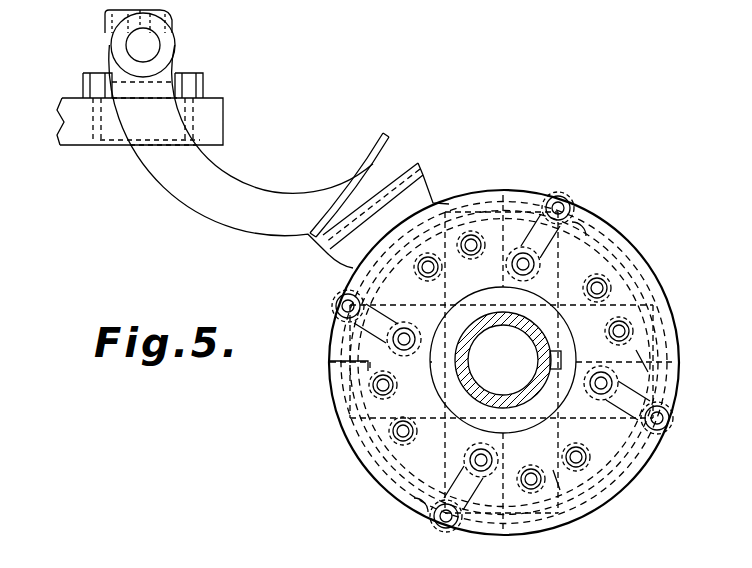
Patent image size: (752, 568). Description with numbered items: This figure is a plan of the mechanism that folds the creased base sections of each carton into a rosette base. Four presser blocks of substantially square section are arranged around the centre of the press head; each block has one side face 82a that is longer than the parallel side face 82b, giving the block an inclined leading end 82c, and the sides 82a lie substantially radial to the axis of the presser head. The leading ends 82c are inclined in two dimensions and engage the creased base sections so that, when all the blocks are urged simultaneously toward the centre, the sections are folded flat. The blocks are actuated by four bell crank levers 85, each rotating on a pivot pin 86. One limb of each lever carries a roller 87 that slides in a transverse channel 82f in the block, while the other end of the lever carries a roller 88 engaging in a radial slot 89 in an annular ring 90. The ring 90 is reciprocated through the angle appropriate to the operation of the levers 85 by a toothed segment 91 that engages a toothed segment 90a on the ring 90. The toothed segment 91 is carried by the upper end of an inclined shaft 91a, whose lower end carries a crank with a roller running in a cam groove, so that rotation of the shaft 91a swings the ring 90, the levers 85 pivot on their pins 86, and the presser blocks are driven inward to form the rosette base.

The side face 82a is at (503, 222).
The side face 82b is at (563, 473).
The inclined leading end 82c is at (522, 328).
The transverse channel 82f is at (636, 350).
The bell crank lever 85 is at (557, 250).
The pivot pin 86 is at (538, 266).
The roller 87 is at (455, 238).
The roller 88 is at (565, 202).
The radial slot 89 is at (573, 217).
The annular ring 90 is at (633, 465).
The toothed segment 90a is at (425, 165).
The toothed segment 91 is at (393, 145).
The inclined shaft 91a is at (152, 42).